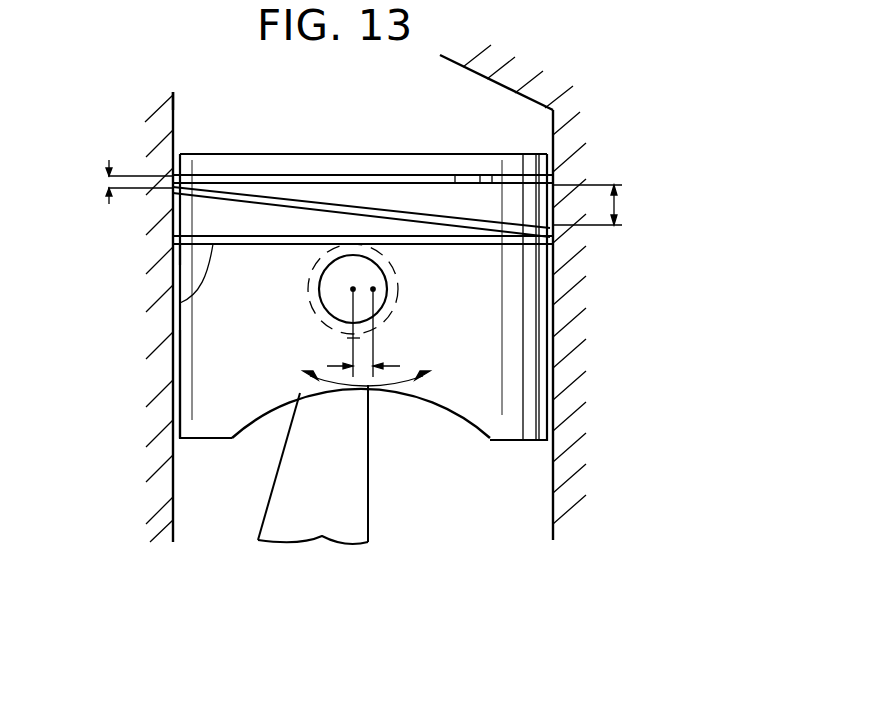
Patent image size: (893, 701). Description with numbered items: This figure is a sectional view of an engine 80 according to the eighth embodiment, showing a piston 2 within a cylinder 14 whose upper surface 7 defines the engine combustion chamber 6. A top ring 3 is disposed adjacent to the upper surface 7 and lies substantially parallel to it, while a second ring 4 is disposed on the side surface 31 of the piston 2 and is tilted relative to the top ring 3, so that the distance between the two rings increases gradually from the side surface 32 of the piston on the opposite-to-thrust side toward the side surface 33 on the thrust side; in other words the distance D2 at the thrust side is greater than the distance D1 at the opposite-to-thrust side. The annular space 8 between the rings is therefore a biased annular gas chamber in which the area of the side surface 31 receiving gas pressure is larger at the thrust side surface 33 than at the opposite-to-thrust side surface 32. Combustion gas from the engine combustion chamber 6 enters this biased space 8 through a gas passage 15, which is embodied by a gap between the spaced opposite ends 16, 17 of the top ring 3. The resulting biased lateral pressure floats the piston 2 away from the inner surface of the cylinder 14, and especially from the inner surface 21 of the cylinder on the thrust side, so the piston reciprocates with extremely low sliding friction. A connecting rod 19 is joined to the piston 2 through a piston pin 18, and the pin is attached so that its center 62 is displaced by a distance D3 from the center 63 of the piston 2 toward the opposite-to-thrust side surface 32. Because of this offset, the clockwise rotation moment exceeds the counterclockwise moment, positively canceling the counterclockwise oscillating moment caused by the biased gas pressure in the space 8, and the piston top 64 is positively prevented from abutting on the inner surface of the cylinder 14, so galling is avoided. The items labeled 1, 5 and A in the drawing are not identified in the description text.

The cylinder block 1 is at (145, 492).
The piston 2 is at (200, 355).
The top ring 3 is at (247, 174).
The second ring 4 is at (173, 218).
The piston 5 is at (172, 310).
The engine combustion chamber 6 is at (442, 102).
The upper surface of the piston 7 is at (360, 152).
The annular space 8 is at (553, 200).
The cylinder 14 is at (552, 456).
The gas passage 15 is at (485, 181).
The end of the piston ring 16 is at (492, 181).
The end of the piston ring 17 is at (465, 181).
The piston pin 18 is at (330, 302).
The connecting rod 19 is at (357, 480).
The inner surface of the cylinder on the thrust side 21 is at (552, 498).
The side surface of the piston 31 is at (553, 272).
The side surface of the piston on the opposite-to-thrust side 32 is at (172, 259).
The side surface of the piston on the thrust side 33 is at (553, 340).
The center of the piston pin 62 is at (353, 289).
The center of the piston 63 is at (373, 289).
The piston top 64 is at (173, 132).
The engine 80 is at (102, 403).
The distance between the piston rings on the opposite-to-thrust side D1 is at (108, 182).
The distance between the piston rings on the thrust side D2 is at (614, 205).
The displacement distance of the piston pin center D3 is at (368, 360).
The rotation direction A is at (343, 397).